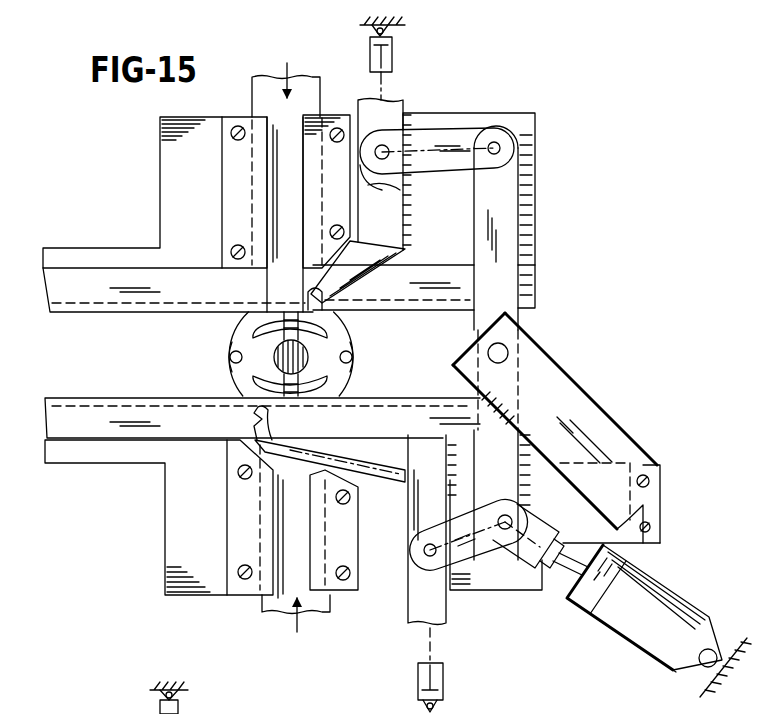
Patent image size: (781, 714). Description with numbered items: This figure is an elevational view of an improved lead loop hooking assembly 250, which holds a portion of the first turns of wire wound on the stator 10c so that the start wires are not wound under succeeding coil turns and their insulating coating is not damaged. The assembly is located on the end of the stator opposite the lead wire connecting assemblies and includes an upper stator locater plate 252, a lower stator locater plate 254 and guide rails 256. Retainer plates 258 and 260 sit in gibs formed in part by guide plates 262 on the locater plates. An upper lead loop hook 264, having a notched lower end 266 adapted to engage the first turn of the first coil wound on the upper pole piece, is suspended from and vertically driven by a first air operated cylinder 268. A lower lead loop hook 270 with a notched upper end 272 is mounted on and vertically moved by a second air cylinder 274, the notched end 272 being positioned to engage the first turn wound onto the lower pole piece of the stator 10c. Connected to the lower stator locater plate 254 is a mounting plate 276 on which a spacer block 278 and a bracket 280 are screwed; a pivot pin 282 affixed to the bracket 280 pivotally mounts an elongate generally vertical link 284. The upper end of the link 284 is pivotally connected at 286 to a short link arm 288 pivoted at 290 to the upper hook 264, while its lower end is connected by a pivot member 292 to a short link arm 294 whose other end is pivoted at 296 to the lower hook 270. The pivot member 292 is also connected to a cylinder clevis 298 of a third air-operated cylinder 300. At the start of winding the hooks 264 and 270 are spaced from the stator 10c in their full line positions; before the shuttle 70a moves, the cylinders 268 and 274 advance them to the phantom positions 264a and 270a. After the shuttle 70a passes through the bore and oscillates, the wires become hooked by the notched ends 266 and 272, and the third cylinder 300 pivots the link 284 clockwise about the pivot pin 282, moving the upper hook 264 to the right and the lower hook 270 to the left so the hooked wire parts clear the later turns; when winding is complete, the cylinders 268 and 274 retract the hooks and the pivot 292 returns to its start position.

The lead loop hooking assembly 250 is at (552, 332).
The upper stator locater plate 252 is at (165, 198).
The lower stator locater plate 254 is at (118, 458).
The guide rails 256 is at (112, 315).
The retainer plate 258 is at (252, 93).
The retainer plate 260 is at (262, 608).
The guide plates 262 is at (228, 176).
The upper lead loop hook 264 is at (396, 107).
The phantom line position of upper lead loop hook 264a is at (380, 277).
The notched lower end 266 is at (311, 292).
The first air operated cylinder 268 is at (395, 52).
The lower lead loop hook 270 is at (410, 607).
The phantom line position of lower lead loop hook 270a is at (372, 425).
The notched upper end 272 is at (253, 413).
The second air cylinder 274 is at (445, 678).
The mounting plate 276 is at (625, 538).
The spacer block 278 is at (660, 516).
The bracket 280 is at (587, 400).
The pivot pin 282 is at (510, 353).
The elongate generally vertical link 284 is at (505, 195).
The pivotal connection 286 is at (500, 146).
The short link arm 288 is at (468, 130).
The pivot 290 is at (368, 133).
The pivot member 292 is at (505, 540).
The short link arm 294 is at (475, 565).
The pivotal connection 296 is at (424, 555).
The cylinder clevis 298 is at (548, 537).
The third air-operated cylinder 300 is at (688, 600).
The shuttle 70a is at (238, 345).
The stator 10c is at (228, 372).